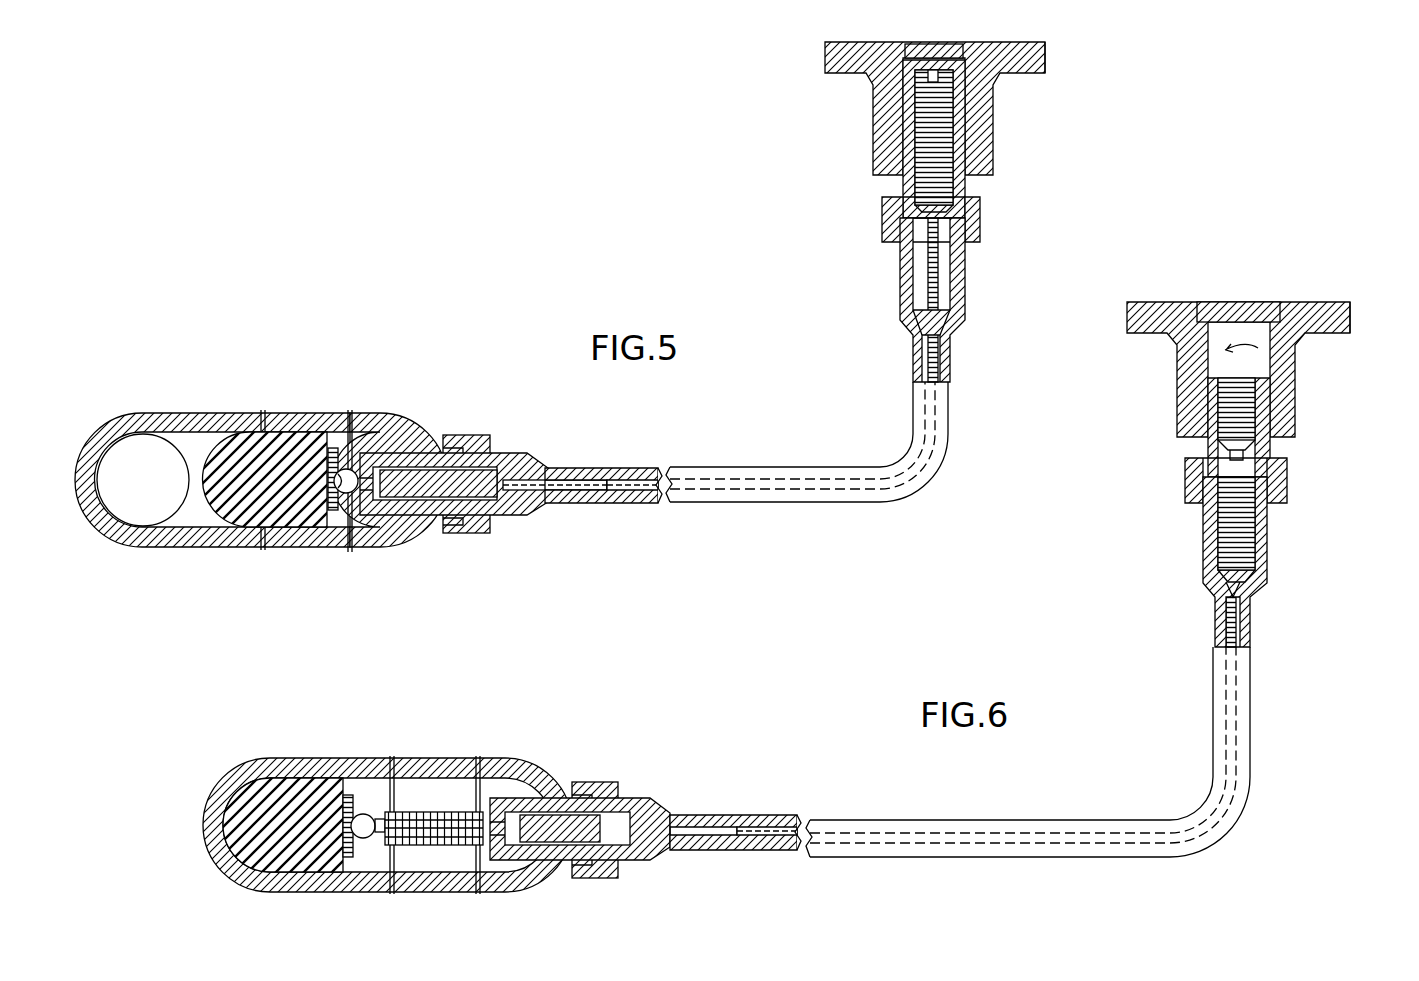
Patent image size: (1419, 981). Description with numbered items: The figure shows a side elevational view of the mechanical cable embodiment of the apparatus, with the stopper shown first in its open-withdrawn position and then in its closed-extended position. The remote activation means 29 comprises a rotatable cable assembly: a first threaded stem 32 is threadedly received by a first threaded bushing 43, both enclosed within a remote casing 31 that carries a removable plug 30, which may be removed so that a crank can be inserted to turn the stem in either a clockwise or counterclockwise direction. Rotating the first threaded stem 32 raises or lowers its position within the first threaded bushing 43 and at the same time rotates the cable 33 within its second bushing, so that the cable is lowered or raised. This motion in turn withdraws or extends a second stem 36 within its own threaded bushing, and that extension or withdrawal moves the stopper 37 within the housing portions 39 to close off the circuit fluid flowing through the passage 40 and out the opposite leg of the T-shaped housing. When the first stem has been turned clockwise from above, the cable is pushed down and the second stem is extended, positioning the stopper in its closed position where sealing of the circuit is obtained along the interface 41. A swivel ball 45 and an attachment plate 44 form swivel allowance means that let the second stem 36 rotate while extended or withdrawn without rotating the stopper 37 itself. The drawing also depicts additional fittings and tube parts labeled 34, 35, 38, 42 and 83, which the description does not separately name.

In FIG. 5, the remote activation means 29 is at (1000, 128).
In FIG. 5, the removable plug 30 is at (870, 52).
In FIG. 6, the removable plug 30 is at (1262, 302).
In FIG. 5, the remote casing 31 is at (1042, 55).
In FIG. 6, the remote casing 31 is at (1350, 322).
In FIG. 5, the first threaded stem 32 is at (917, 173).
In FIG. 6, the first threaded stem 32 is at (1244, 535).
In FIG. 5, the cable 33 is at (640, 468).
In FIG. 6, the cable 33 is at (645, 813).
In FIG. 5, the inner tube 34 is at (578, 492).
In FIG. 5, the coupling body 35 is at (500, 512).
In FIG. 6, the coupling body 35 is at (510, 862).
In FIG. 5, the second stem 36 is at (447, 522).
In FIG. 6, the second stem 36 is at (580, 790).
In FIG. 5, the stopper 37 is at (300, 443).
In FIG. 6, the stopper 37 is at (285, 790).
In FIG. 5, the end cap 38 is at (402, 420).
In FIG. 5, the housing portions 39 is at (200, 413).
In FIG. 5, the passage 40 is at (143, 502).
In FIG. 6, the interface 41 is at (228, 862).
In FIG. 5, the tube fitting 42 is at (966, 290).
In FIG. 5, the first threaded bushing 43 is at (905, 132).
In FIG. 6, the first threaded bushing 43 is at (1267, 397).
In FIG. 5, the attachment plate 44 is at (330, 512).
In FIG. 6, the attachment plate 44 is at (355, 800).
In FIG. 5, the swivel ball 45 is at (360, 512).
In FIG. 6, the swivel ball 45 is at (370, 840).
In FIG. 5, the lock nut 83 is at (980, 230).
In FIG. 6, the lock nut 83 is at (1236, 480).